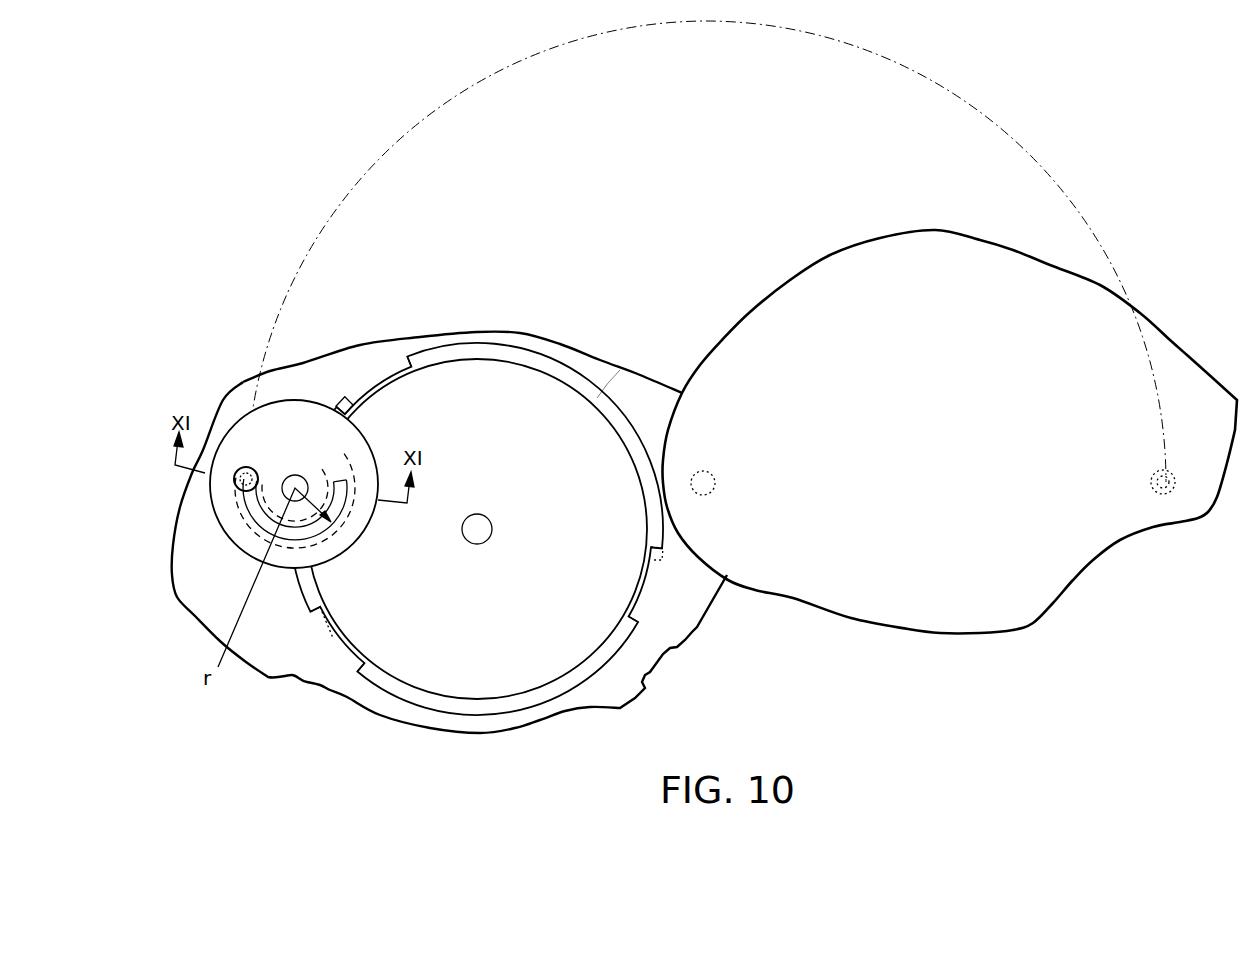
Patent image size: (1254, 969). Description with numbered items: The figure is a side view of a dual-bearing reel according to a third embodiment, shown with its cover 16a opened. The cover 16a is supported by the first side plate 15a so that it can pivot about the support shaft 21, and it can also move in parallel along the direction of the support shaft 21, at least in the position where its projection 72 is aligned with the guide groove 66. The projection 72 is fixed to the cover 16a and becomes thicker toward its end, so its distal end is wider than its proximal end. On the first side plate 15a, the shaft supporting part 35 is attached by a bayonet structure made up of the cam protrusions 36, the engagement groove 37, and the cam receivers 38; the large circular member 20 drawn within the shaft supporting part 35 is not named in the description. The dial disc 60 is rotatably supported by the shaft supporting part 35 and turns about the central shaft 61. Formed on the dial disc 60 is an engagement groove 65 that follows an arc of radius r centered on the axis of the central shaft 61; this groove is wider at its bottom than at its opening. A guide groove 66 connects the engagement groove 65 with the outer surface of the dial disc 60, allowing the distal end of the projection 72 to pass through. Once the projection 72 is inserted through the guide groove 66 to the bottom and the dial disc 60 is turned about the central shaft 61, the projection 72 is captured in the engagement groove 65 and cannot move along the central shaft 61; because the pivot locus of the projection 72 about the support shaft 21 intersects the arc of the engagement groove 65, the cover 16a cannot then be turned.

The first side plate 15a is at (243, 381).
The cover 16a is at (866, 236).
The rotary disc 20 is at (490, 540).
The support shaft 21 is at (710, 471).
The shaft supporting part 35 is at (510, 350).
The cam protrusions 36 is at (360, 387).
The engagement groove 37 is at (606, 397).
The cam receivers 38 is at (378, 371).
The dial disc 60 is at (287, 402).
The central shaft 61 is at (290, 492).
The engagement groove 65 is at (250, 522).
The guide groove 66 is at (236, 486).
The projection 72 is at (1166, 494).